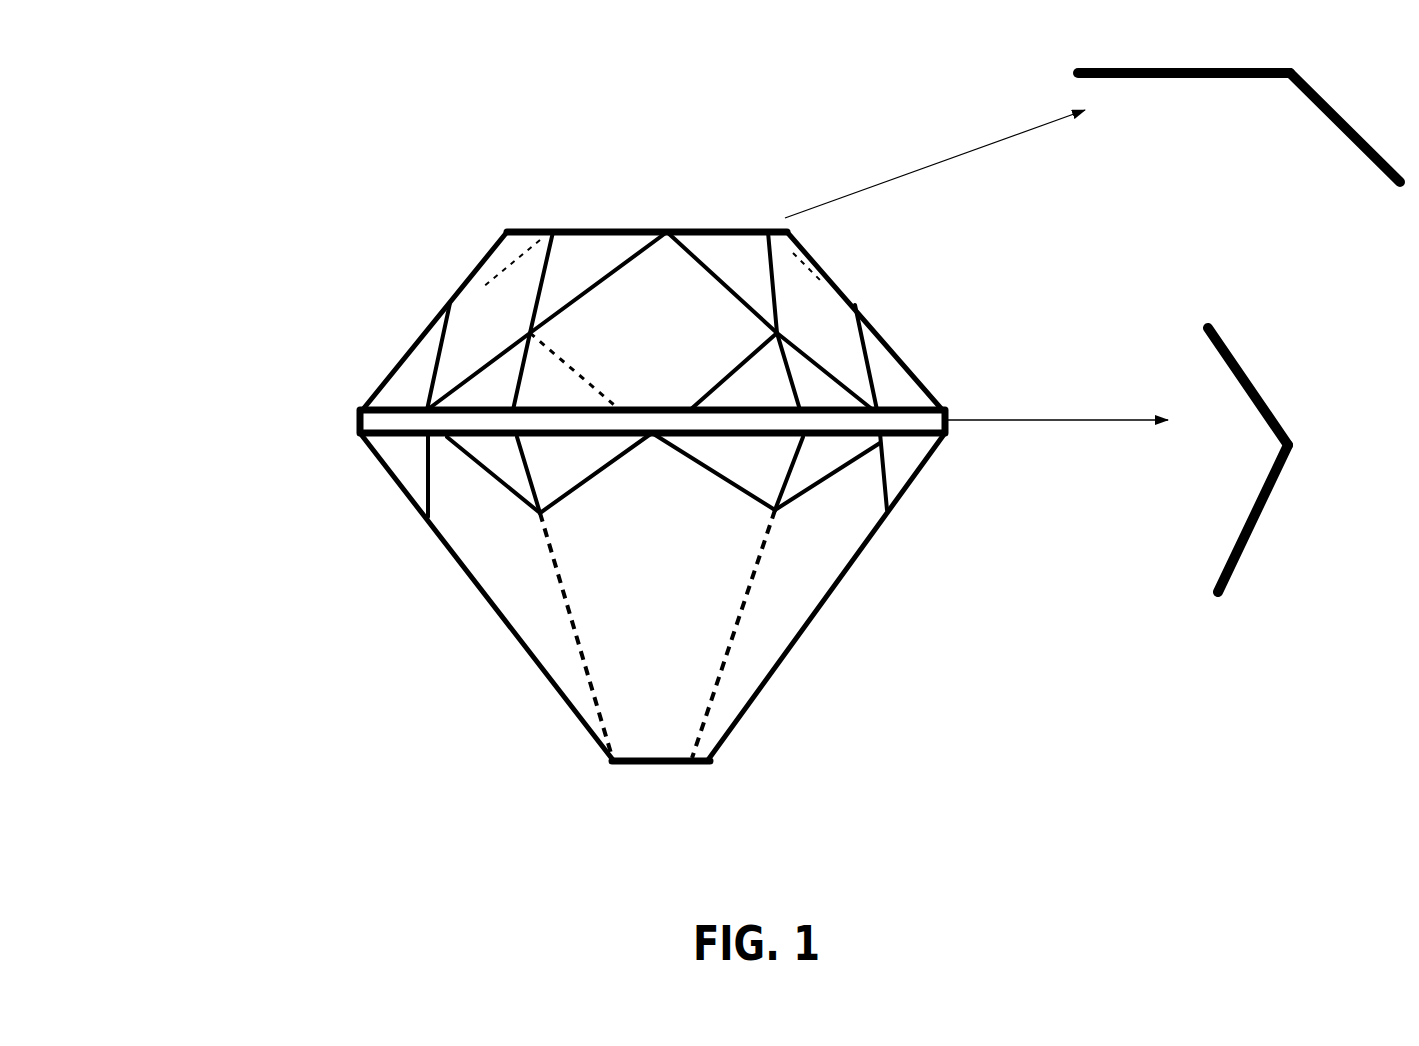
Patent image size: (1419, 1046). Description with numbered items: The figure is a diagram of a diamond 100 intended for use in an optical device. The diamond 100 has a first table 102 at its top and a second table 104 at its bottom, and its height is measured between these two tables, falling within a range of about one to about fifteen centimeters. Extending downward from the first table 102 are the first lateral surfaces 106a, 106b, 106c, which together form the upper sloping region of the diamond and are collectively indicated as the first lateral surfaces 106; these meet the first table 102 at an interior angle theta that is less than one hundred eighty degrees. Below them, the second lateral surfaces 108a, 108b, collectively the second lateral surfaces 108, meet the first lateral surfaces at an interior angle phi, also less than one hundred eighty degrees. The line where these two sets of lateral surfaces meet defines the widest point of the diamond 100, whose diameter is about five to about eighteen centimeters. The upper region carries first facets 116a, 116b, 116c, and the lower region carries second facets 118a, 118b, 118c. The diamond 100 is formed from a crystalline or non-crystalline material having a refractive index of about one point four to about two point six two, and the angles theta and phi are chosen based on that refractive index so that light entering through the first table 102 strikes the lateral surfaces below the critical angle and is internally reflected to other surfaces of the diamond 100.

The diamond 100 is at (177, 108).
The first table 102 is at (635, 227).
The second table 104 is at (603, 763).
The first lateral surfaces 106 is at (880, 259).
The first lateral surface 106a is at (437, 307).
The first lateral surface 106b is at (658, 285).
The first lateral surface 106c is at (865, 302).
The second lateral surfaces 108 is at (842, 596).
The second lateral surface 108a is at (430, 597).
The second lateral surface 108b is at (645, 655).
The first facet 116a is at (520, 329).
The first facet 116b is at (682, 336).
The first facet 116c is at (842, 329).
The second facet 118a is at (507, 543).
The second facet 118b is at (682, 526).
The second facet 118c is at (853, 543).